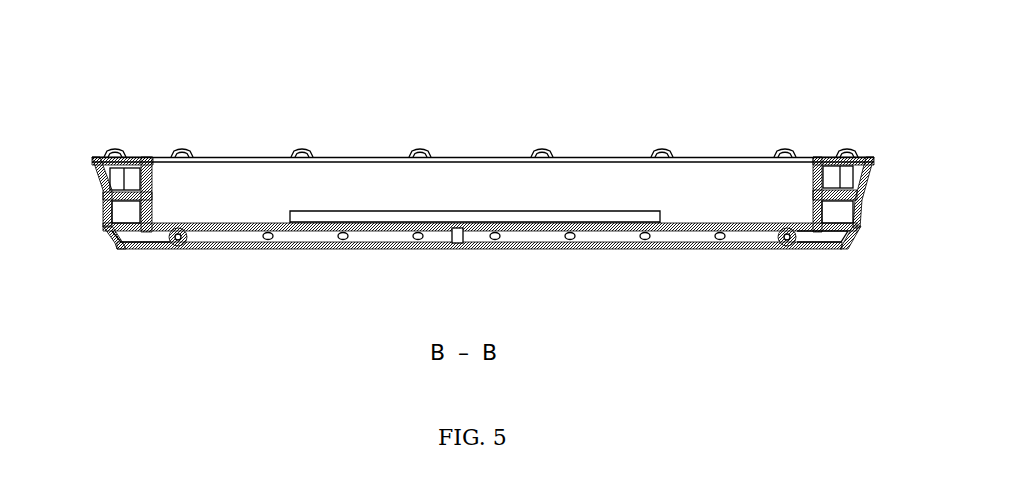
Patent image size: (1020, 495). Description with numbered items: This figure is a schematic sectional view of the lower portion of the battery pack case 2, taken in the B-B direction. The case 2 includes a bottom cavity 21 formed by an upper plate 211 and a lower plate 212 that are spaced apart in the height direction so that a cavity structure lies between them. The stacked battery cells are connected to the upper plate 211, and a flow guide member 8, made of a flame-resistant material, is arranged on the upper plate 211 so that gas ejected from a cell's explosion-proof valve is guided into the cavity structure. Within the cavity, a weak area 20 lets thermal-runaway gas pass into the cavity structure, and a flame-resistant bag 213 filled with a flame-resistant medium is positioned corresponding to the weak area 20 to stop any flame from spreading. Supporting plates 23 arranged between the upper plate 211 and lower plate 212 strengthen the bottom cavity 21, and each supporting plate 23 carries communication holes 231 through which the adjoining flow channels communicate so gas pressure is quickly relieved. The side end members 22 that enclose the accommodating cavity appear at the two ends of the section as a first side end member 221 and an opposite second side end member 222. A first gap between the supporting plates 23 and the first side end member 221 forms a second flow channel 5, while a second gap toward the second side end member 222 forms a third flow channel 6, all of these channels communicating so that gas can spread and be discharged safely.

The case 2 is at (800, 80).
The weak area 20 is at (471, 226).
The bottom cavity 21 is at (680, 117).
The upper plate 211 is at (632, 218).
The lower plate 212 is at (623, 246).
The flame-resistant bag 213 is at (452, 241).
The side end member 22 is at (840, 157).
The first side end member 221 is at (858, 236).
The second side end member 222 is at (110, 237).
The supporting plate 23 is at (747, 233).
The communication hole 231 is at (570, 238).
The second flow channel 5 is at (787, 245).
The third flow channel 6 is at (173, 246).
The flow guide member 8 is at (407, 219).